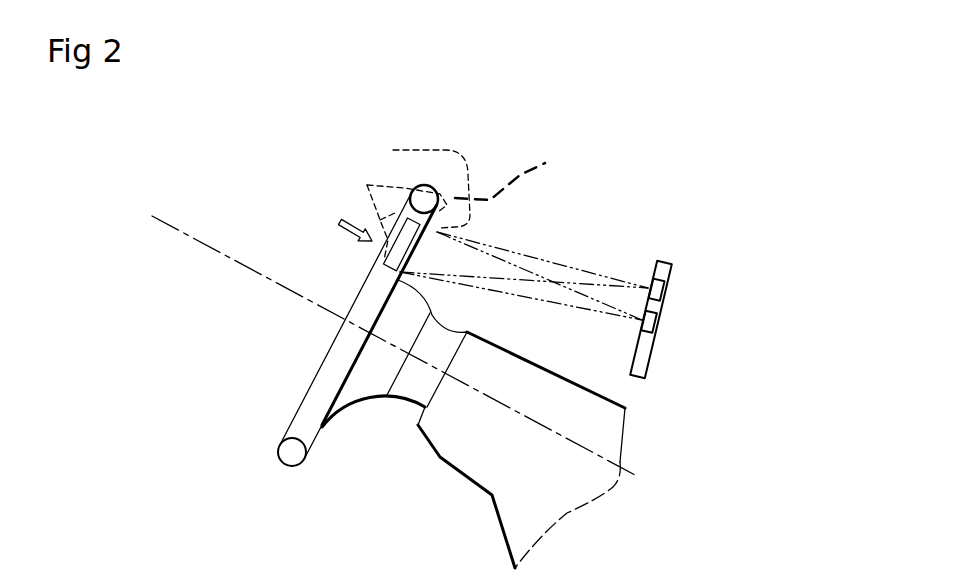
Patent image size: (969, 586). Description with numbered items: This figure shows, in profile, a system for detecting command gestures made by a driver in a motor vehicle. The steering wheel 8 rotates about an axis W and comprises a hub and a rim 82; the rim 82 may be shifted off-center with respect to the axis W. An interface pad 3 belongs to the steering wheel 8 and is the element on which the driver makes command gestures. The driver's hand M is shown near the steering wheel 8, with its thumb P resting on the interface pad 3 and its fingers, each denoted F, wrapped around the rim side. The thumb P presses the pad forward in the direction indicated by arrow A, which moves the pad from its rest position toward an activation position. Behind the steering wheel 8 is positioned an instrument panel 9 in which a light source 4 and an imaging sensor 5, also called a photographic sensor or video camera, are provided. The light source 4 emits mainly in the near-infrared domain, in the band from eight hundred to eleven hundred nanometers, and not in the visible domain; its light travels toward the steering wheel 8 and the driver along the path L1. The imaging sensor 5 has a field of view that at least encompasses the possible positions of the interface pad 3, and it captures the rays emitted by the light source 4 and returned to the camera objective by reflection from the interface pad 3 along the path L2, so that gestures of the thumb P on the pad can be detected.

The interface pad 3 is at (370, 263).
The light source 4 is at (682, 287).
The imaging sensor 5 is at (674, 330).
The steering wheel 8 is at (298, 353).
The instrument panel 9 is at (710, 273).
The rim 82 is at (282, 462).
The axis W is at (408, 336).
The thumb P is at (383, 228).
The arrow A is at (345, 218).
The hand M is at (424, 162).
The finger F is at (506, 167).
The path L1 is at (570, 263).
The path L2 is at (553, 303).